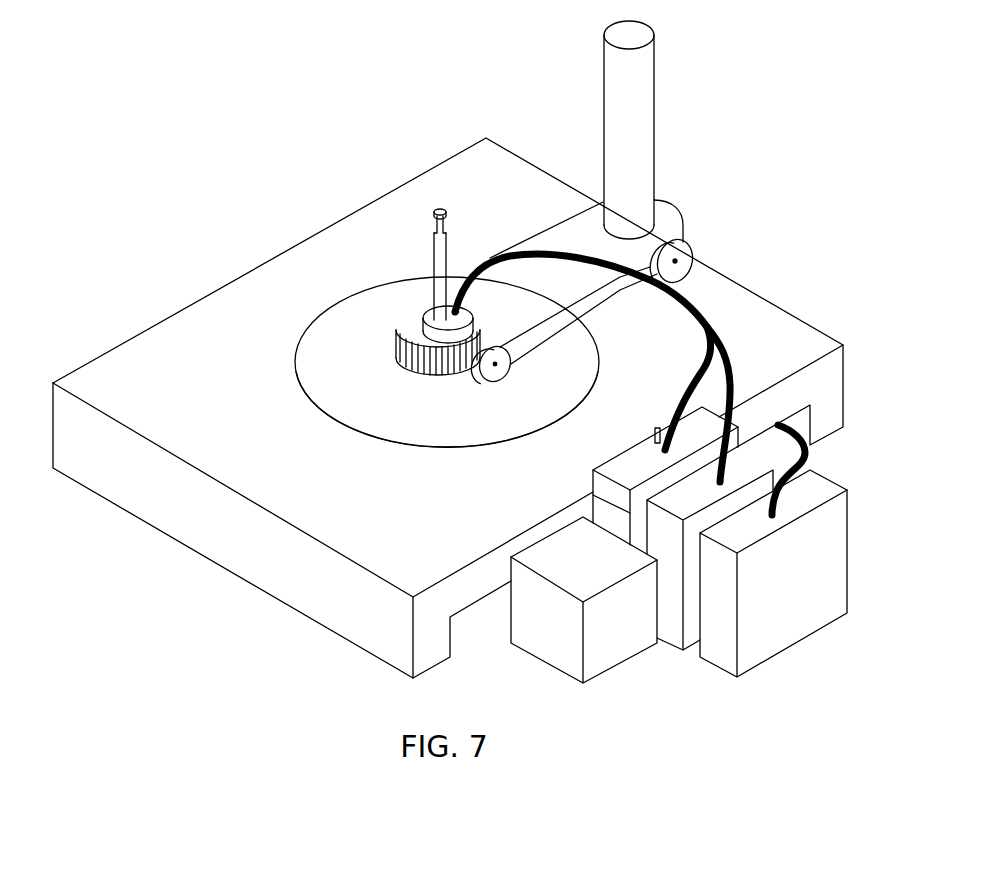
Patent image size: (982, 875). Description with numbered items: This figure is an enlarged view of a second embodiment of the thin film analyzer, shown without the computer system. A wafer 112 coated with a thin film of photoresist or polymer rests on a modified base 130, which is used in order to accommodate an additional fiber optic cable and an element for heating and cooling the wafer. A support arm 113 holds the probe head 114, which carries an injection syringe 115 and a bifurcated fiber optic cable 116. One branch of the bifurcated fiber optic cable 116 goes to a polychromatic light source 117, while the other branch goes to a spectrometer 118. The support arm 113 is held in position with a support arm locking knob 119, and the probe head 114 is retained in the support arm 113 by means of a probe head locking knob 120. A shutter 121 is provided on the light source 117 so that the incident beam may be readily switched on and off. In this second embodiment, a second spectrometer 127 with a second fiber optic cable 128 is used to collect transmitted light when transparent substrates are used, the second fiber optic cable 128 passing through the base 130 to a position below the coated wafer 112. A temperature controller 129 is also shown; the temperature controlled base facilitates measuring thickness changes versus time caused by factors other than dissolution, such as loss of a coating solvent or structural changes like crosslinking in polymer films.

The wafer 112 is at (321, 413).
The support arm 113 is at (542, 228).
The probe head 114 is at (470, 311).
The injection syringe 115 is at (432, 262).
The bifurcated fiber optic cable 116 is at (688, 300).
The polychromatic light source 117 is at (612, 459).
The spectrometer 118 is at (593, 493).
The support arm locking knob 119 is at (692, 243).
The probe head locking knob 120 is at (500, 381).
The shutter 121 is at (657, 431).
The second spectrometer 127 is at (717, 667).
The second fiber optic cable 128 is at (806, 456).
The temperature controller 129 is at (557, 670).
The modified base 130 is at (213, 563).